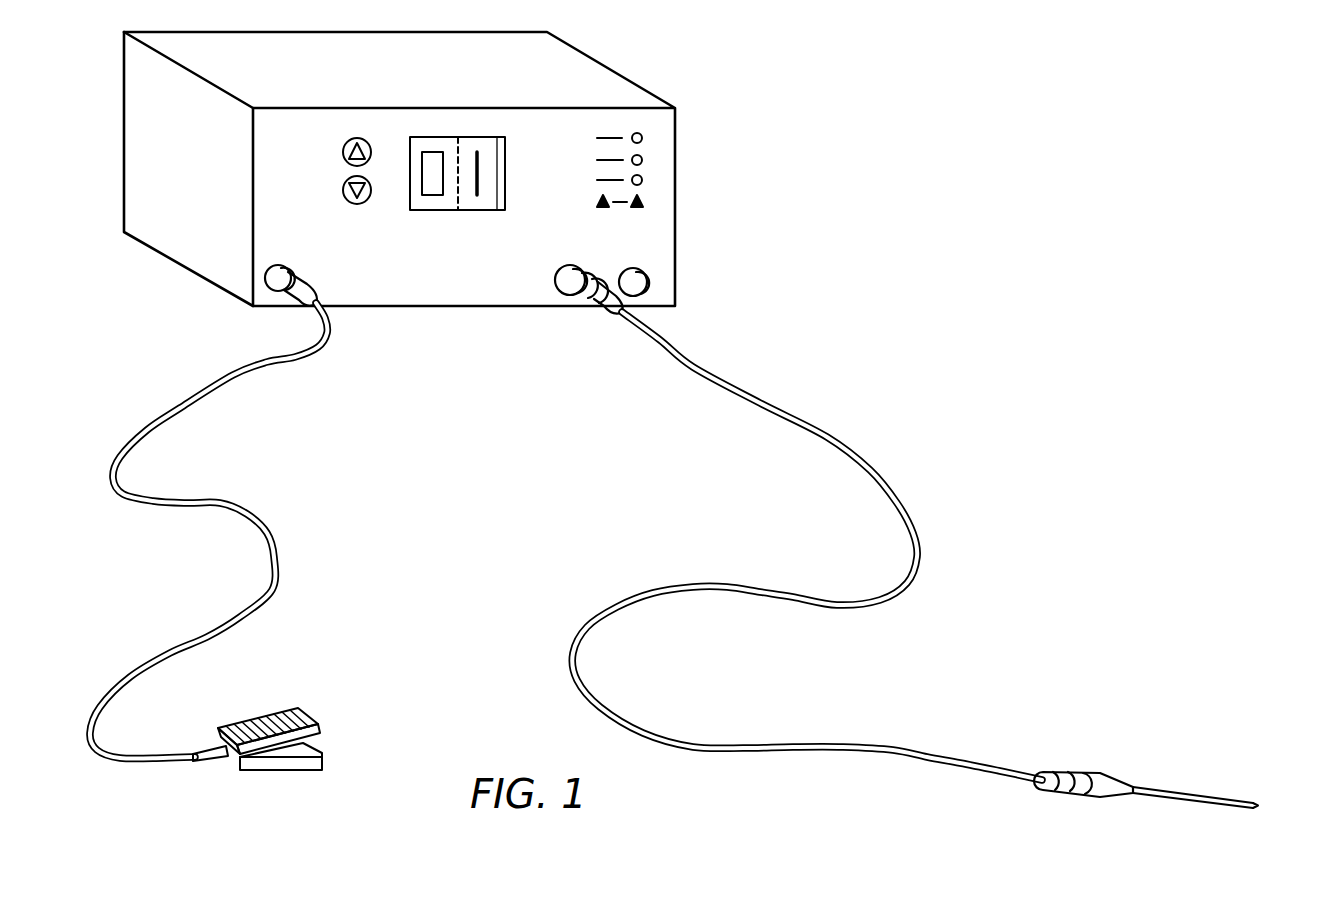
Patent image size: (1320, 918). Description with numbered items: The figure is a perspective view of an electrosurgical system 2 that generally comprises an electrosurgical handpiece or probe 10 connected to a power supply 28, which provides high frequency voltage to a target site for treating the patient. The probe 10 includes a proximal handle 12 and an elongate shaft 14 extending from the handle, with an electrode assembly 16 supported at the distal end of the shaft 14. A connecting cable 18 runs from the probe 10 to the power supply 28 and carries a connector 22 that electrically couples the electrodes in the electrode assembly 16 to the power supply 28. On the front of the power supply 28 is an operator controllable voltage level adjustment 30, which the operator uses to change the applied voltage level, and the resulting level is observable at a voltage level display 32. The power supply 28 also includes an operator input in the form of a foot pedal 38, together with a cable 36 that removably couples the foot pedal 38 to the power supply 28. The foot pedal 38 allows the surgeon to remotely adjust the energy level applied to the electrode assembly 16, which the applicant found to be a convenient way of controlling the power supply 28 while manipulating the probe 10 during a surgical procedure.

The electrosurgical system 2 is at (890, 232).
The electrosurgical handpiece or probe 10 is at (1161, 753).
The proximal handle 12 is at (1075, 772).
The elongate shaft 14 is at (1200, 795).
The electrode assembly 16 is at (1258, 805).
The connecting cable 18 is at (870, 463).
The connector 22 is at (592, 279).
The power supply 28 is at (660, 83).
The voltage level adjustment 30 is at (348, 177).
The voltage level display 32 is at (465, 145).
The cable 36 is at (260, 518).
The foot pedal 38 is at (307, 711).